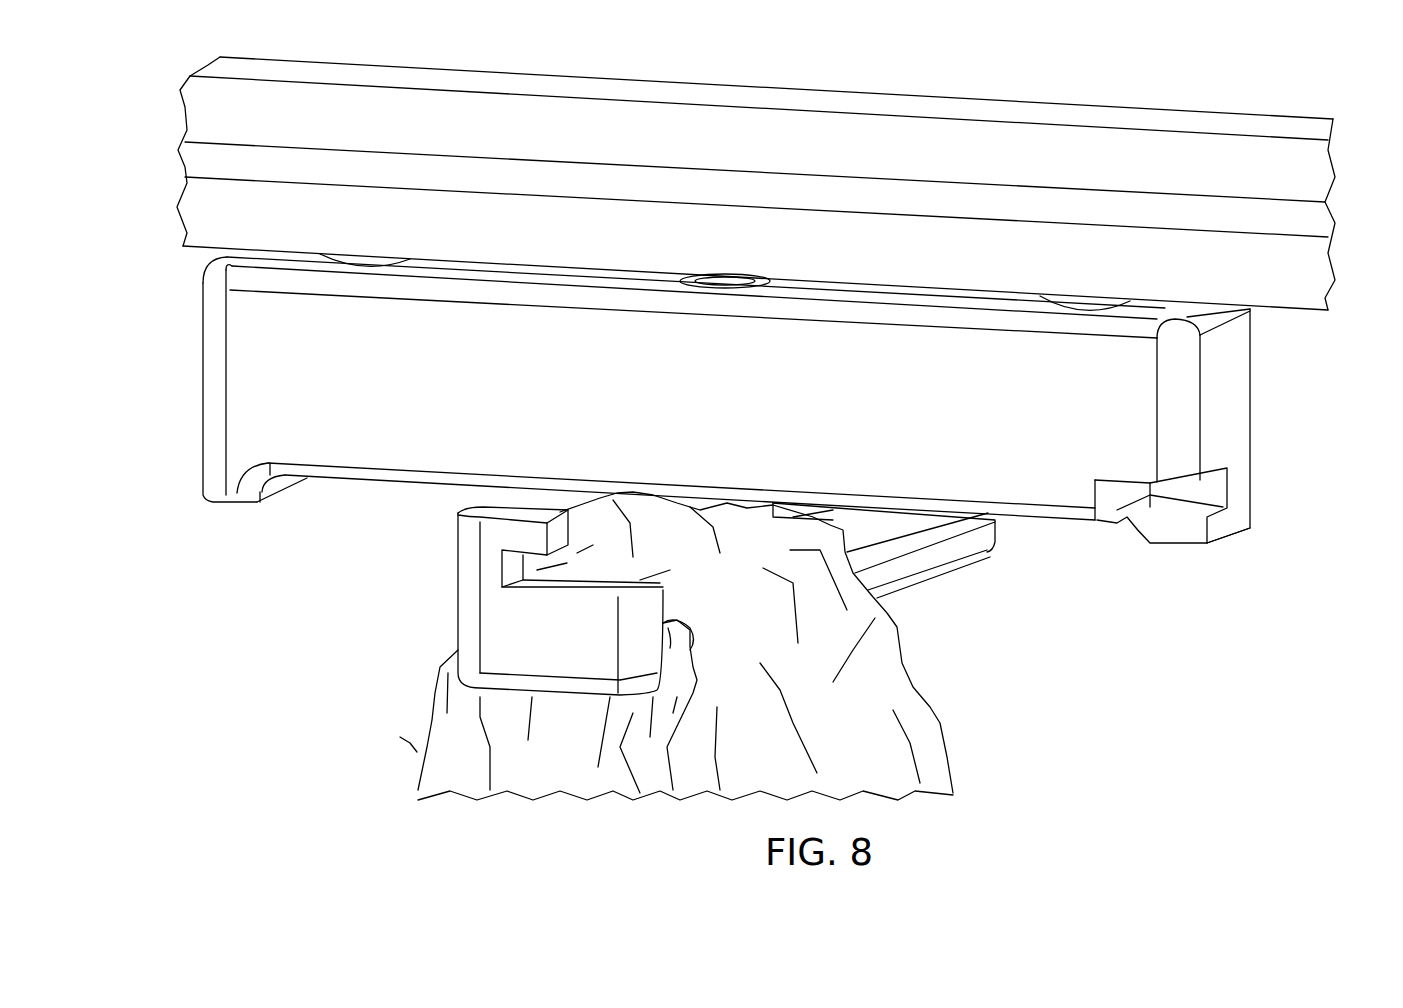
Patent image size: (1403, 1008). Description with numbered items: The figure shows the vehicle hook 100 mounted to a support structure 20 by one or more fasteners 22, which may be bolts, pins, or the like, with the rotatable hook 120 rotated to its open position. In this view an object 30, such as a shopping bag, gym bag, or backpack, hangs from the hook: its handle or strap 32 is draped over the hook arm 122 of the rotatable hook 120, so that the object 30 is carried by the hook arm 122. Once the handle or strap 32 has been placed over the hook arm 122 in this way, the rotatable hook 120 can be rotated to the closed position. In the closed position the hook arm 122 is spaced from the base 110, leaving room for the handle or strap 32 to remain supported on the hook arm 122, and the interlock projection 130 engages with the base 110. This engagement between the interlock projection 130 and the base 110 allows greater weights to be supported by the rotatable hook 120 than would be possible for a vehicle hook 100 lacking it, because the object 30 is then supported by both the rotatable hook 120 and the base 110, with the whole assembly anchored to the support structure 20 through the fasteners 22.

The support structure 20 is at (176, 228).
The fasteners 22 is at (312, 265).
The object 30 is at (400, 788).
The handle or strap 32 is at (423, 753).
The vehicle hook 100 is at (1276, 595).
The base 110 is at (1283, 392).
The rotatable hook 120 is at (977, 617).
The hook arm 122 is at (676, 606).
The interlock projection 130 is at (443, 530).